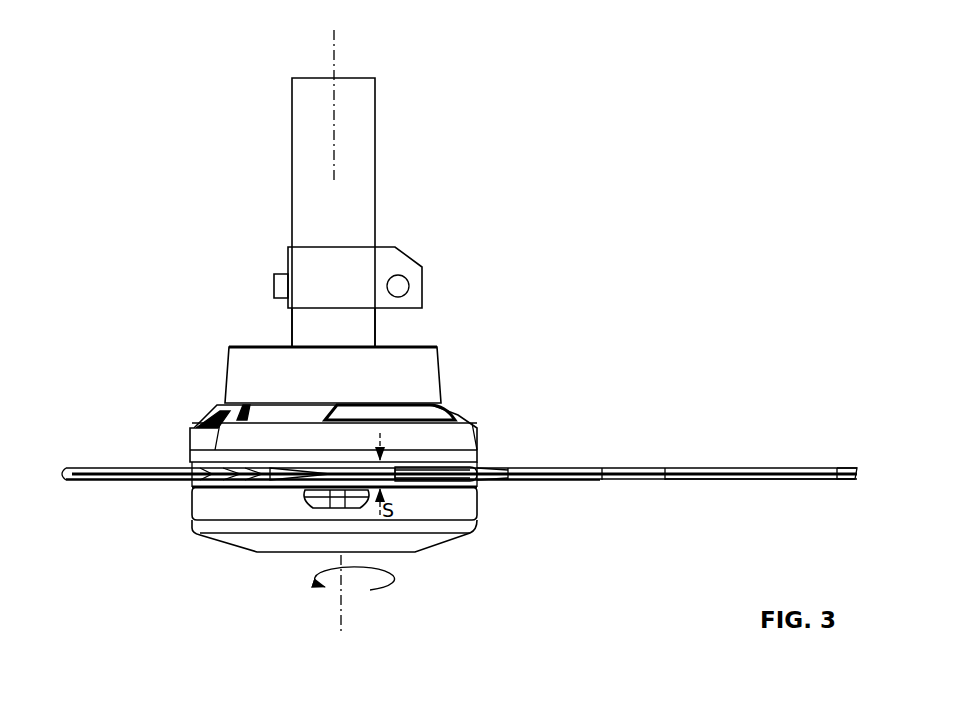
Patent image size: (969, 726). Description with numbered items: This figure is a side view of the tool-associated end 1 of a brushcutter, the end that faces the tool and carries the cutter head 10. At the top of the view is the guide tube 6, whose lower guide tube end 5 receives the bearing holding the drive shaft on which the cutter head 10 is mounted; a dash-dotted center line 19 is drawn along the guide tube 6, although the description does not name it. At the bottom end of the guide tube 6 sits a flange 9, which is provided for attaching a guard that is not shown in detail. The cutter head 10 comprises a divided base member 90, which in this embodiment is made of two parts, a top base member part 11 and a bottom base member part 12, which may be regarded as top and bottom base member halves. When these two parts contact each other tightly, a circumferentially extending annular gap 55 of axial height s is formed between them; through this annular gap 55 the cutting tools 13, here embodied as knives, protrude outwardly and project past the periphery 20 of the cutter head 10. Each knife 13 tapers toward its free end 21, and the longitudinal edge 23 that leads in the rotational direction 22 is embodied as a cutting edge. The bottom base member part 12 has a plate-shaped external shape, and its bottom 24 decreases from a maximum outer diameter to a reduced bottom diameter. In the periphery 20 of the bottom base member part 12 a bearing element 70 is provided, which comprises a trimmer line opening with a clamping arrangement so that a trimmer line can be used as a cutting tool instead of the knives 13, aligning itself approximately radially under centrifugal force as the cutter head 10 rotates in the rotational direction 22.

The tool-associated end 1 is at (228, 250).
The guide tube end 5 is at (362, 335).
The guide tube 6 is at (360, 135).
The flange 9 is at (398, 266).
The cutter head 10 is at (145, 457).
The top base member part 11 is at (200, 437).
The bottom base member part 12 is at (217, 512).
The cutting tool 13 is at (107, 480).
The shaft axis 19 is at (334, 33).
The periphery 20 is at (192, 503).
The free end 21 is at (857, 468).
The rotational direction 22 is at (372, 597).
The longitudinal edge 23 is at (692, 477).
The bottom 24 is at (287, 548).
The annular gap 55 is at (417, 487).
The bearing element 70 is at (313, 512).
The base member 90 is at (492, 420).